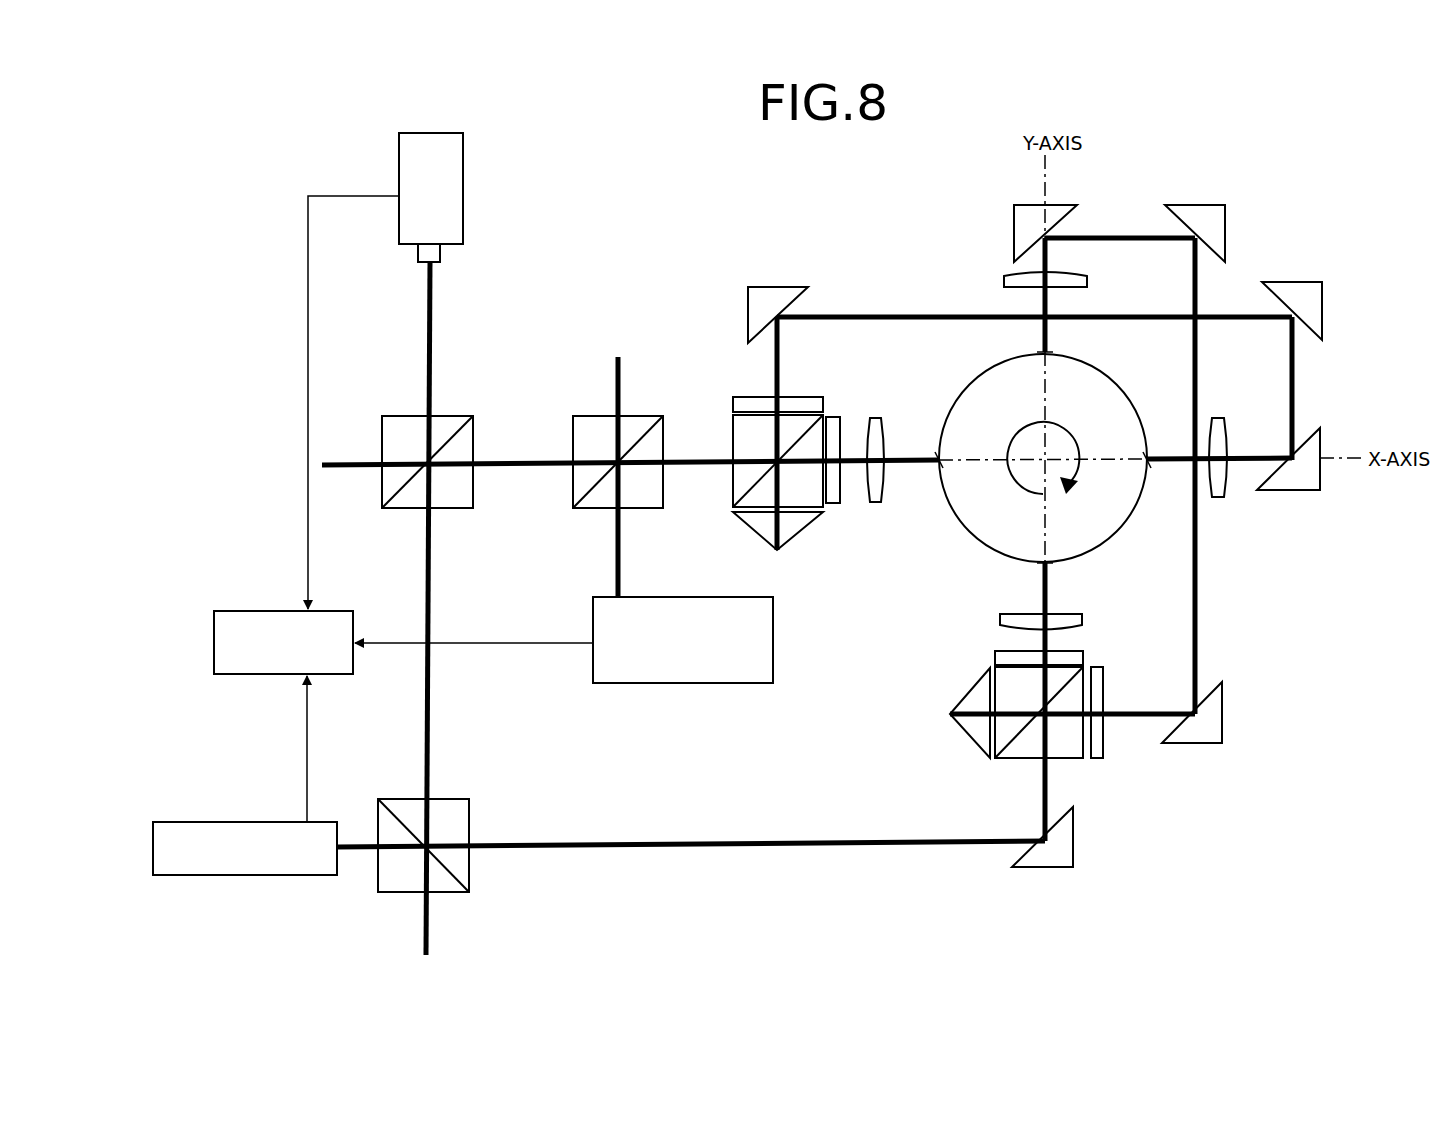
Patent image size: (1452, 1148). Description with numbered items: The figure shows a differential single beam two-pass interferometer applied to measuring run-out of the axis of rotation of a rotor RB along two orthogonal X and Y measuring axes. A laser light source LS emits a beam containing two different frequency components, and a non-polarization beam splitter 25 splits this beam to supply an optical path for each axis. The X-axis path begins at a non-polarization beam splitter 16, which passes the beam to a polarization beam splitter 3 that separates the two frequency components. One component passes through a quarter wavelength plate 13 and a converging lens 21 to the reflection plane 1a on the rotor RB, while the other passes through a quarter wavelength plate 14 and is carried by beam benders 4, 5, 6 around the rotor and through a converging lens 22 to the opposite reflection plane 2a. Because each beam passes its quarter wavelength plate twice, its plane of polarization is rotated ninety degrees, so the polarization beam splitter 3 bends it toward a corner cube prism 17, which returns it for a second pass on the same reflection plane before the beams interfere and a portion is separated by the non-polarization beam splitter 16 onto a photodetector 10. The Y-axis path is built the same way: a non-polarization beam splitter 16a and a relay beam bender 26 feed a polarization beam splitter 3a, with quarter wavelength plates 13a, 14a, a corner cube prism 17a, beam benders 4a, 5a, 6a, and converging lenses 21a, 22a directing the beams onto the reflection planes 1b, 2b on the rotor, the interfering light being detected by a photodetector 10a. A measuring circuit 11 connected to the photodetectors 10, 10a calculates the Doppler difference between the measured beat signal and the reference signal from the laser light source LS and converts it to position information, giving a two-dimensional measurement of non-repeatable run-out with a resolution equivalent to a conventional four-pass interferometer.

The laser light source LS is at (452, 180).
The non-polarization beam splitter 25 is at (455, 492).
The non-polarization beam splitter 16 is at (583, 425).
The quarter wavelength plate 14 is at (733, 405).
The polarization beam splitter 3 is at (737, 491).
The quarter wavelength plate 13 is at (836, 505).
The corner cube prism 17 is at (787, 530).
The converging lens 21 is at (874, 420).
The rotor RB is at (1102, 525).
The reflection plane 1a is at (939, 458).
The reflection plane 2a is at (1147, 458).
The reflection plane 2b is at (1048, 354).
The reflection plane 1b is at (1040, 563).
The converging lens 22a is at (1087, 282).
The converging lens 22 is at (1217, 420).
The converging lens 21a is at (1082, 618).
The quarter wavelength plate 13a is at (995, 655).
The polarization beam splitter 3a is at (1012, 755).
The quarter wavelength plate 14a is at (1098, 680).
The corner cube prism 17a is at (962, 698).
The beam bender 4 is at (771, 312).
The beam bender 6a is at (1047, 231).
The beam bender 5a is at (1221, 231).
The beam bender 5 is at (1292, 311).
The beam bender 6 is at (1311, 483).
The beam bender 4a is at (1219, 736).
The relay beam bender 26 is at (1060, 847).
The measuring circuit 11 is at (340, 610).
The photodetector 10 is at (735, 683).
The photodetector 10a is at (237, 822).
The non-polarization beam splitter 16a is at (453, 808).